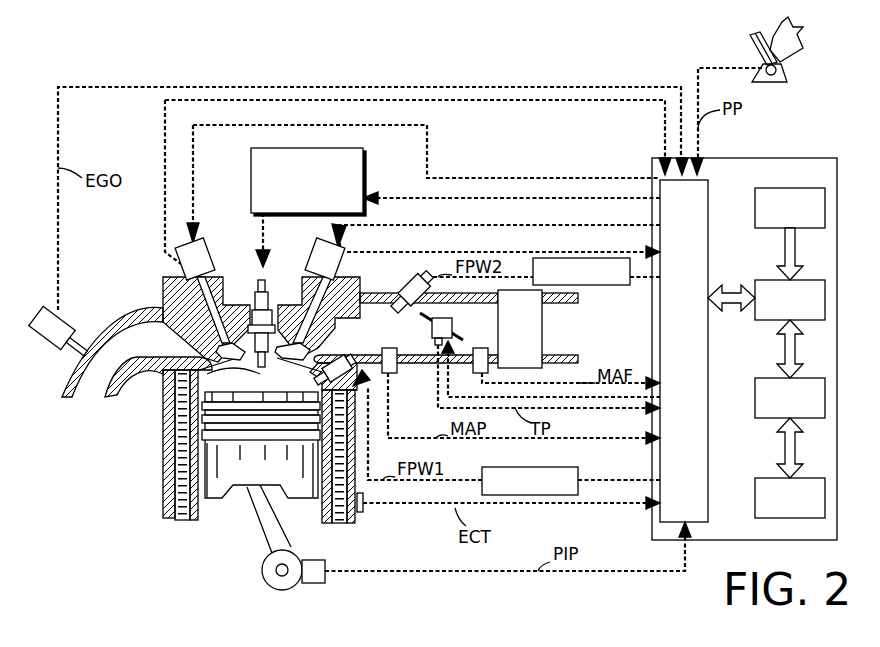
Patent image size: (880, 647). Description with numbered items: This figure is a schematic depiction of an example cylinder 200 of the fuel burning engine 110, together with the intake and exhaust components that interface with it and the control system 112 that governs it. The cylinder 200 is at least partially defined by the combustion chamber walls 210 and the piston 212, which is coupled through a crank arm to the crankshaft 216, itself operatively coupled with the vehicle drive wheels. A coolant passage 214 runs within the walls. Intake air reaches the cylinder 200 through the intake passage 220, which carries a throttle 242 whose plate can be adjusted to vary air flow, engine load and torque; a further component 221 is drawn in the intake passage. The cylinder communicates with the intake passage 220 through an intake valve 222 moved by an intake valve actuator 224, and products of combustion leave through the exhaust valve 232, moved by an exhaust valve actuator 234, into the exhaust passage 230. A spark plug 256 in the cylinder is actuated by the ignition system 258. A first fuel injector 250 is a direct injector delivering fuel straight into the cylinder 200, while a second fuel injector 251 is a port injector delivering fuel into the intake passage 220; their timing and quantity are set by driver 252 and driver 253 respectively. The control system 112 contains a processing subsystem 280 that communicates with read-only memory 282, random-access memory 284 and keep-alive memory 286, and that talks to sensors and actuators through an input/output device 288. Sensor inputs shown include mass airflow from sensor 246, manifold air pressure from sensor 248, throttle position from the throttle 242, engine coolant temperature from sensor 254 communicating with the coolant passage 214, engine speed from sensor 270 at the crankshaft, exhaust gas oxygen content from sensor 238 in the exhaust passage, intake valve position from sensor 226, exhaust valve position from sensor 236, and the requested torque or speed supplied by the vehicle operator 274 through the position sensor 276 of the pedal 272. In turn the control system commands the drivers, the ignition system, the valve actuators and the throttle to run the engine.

The fuel burning engine 110 is at (115, 462).
The control system 112 is at (740, 158).
The cylinder 200 is at (258, 373).
The combustion chamber walls 210 is at (205, 515).
The piston 212 is at (245, 472).
The coolant passage 214 is at (337, 522).
The crankshaft 216 is at (270, 585).
The intake passage 220 is at (413, 335).
The intake air component 221 is at (506, 338).
The intake valve 222 is at (296, 350).
The intake valve actuator 224 is at (320, 240).
The intake valve position sensor 226 is at (352, 252).
The exhaust passage 230 is at (150, 338).
The exhaust valve 232 is at (220, 352).
The exhaust valve actuator 234 is at (212, 245).
The exhaust valve position sensor 236 is at (183, 265).
The exhaust gas oxygen sensor 238 is at (45, 343).
The throttle 242 is at (397, 373).
The mass airflow sensor 246 is at (478, 348).
The manifold air pressure sensor 248 is at (446, 363).
The first fuel injector 250 is at (335, 366).
The second fuel injector 251 is at (405, 280).
The driver 252 is at (580, 474).
The driver 253 is at (612, 285).
The engine coolant temperature sensor 254 is at (362, 508).
The spark plug 256 is at (257, 312).
The ignition system 258 is at (363, 160).
The engine speed sensor 270 is at (313, 583).
The pedal 272 is at (752, 48).
The vehicle operator 274 is at (800, 30).
The position sensor 276 is at (785, 74).
The processing subsystem 280 is at (753, 280).
The read-only memory 282 is at (753, 188).
The random-access memory 284 is at (753, 378).
The keep-alive memory 286 is at (753, 478).
The input/output device 288 is at (708, 488).